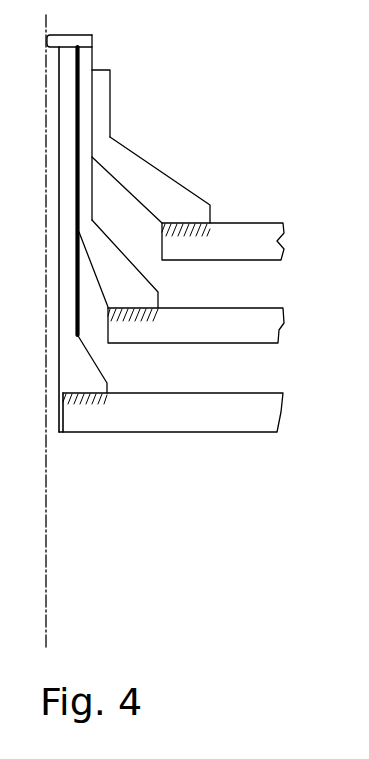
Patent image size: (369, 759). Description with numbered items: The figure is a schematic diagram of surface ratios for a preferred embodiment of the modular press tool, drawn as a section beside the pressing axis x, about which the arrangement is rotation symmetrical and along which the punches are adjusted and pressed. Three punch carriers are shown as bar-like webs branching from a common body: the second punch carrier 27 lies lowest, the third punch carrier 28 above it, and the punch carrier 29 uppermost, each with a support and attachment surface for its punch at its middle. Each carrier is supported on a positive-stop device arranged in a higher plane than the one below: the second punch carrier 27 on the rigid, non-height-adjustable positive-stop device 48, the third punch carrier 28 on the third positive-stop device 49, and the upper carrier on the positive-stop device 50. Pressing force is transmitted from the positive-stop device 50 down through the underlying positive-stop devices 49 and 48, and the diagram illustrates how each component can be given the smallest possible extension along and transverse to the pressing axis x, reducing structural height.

The second punch carrier 27 is at (103, 375).
The third punch carrier 28 is at (102, 233).
The fourth punch carrier 29 is at (118, 142).
The positive-stop device 48 is at (283, 396).
The third positive-stop device 49 is at (283, 315).
The positive-stop device 50 is at (280, 226).
The pressing axis x is at (47, 512).